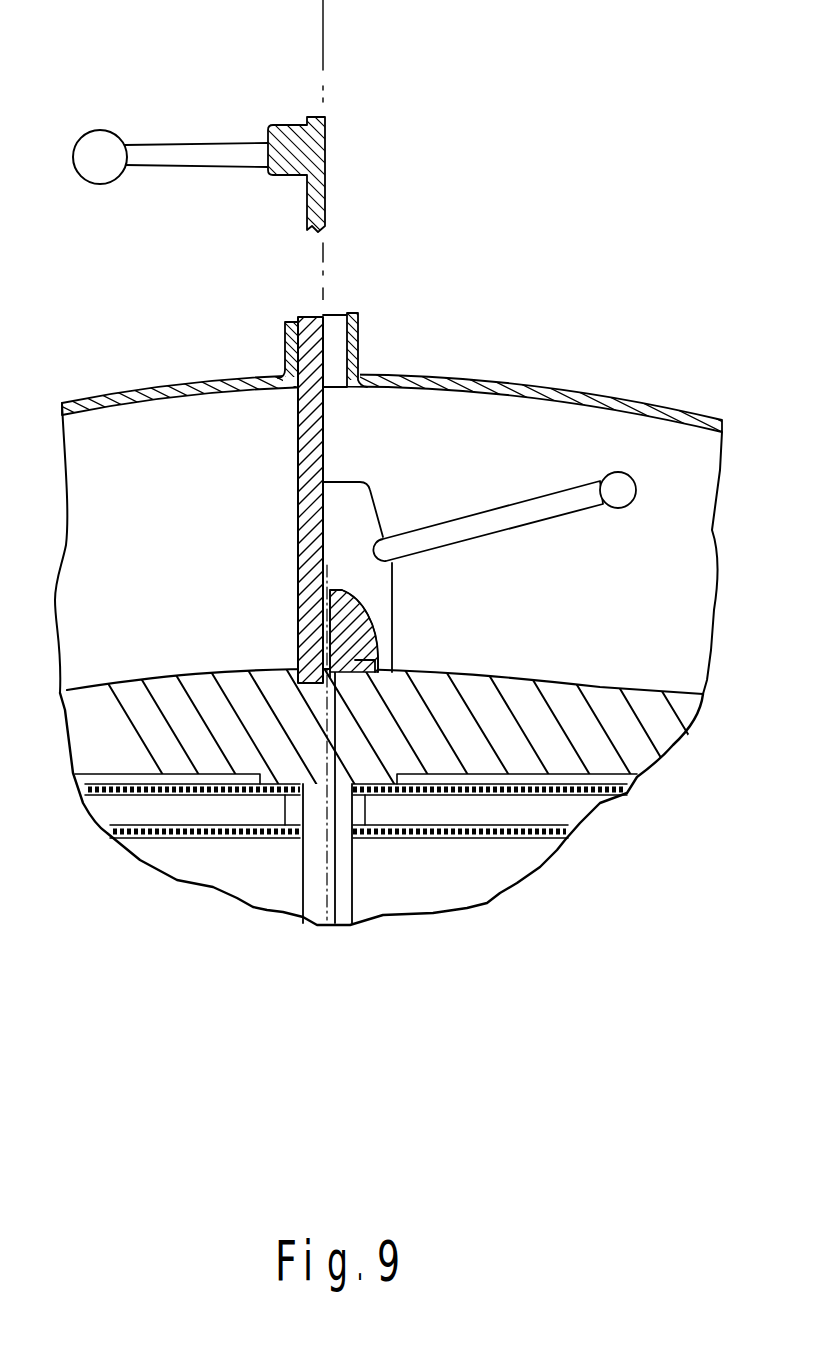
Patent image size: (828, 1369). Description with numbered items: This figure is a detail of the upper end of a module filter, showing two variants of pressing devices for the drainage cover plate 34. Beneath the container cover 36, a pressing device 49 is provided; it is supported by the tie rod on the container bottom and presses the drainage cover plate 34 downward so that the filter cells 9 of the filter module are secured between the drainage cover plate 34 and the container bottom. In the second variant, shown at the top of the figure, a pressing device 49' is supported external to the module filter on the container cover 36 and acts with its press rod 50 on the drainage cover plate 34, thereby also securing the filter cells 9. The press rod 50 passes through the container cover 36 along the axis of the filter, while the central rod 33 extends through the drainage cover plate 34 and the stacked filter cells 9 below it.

The pressing device 49' is at (259, 126).
The container cover 36 is at (583, 390).
The press rod 50 is at (298, 537).
The pressing device 49 is at (479, 572).
The drainage cover plate 34 is at (627, 712).
The central rod 33 is at (330, 847).
The filter cells 9 is at (483, 838).